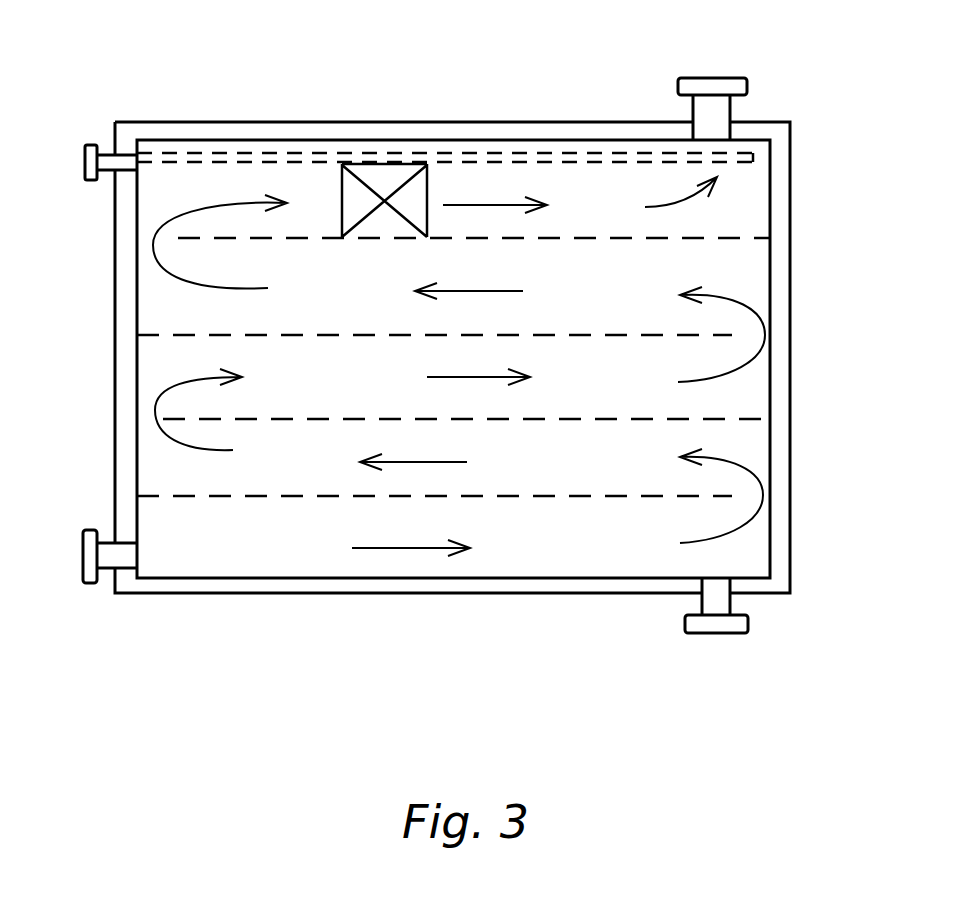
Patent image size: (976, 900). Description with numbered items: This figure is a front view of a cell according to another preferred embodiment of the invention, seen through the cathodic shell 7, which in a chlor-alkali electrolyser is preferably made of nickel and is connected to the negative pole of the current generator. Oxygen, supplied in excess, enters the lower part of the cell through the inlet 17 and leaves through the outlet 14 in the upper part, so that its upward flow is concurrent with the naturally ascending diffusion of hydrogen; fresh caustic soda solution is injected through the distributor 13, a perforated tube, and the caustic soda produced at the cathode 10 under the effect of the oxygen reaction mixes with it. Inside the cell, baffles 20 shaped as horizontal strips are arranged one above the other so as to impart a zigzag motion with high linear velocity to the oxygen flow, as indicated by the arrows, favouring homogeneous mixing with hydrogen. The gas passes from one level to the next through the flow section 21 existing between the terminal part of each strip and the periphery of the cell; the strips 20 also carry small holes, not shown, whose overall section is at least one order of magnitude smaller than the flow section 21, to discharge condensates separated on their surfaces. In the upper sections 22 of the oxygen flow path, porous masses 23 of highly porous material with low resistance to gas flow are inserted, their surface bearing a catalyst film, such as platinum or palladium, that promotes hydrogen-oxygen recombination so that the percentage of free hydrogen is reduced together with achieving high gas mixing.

The cathodic shell 7 is at (738, 262).
The cathode 10 is at (717, 595).
The distributor 13 is at (118, 163).
The outlet of the oxygen 14 is at (715, 118).
The inlet of the oxygen 17 is at (113, 558).
The baffles 20 is at (172, 495).
The flow section 21 is at (748, 495).
The sections 22 is at (567, 198).
The porous masses 23 is at (383, 180).